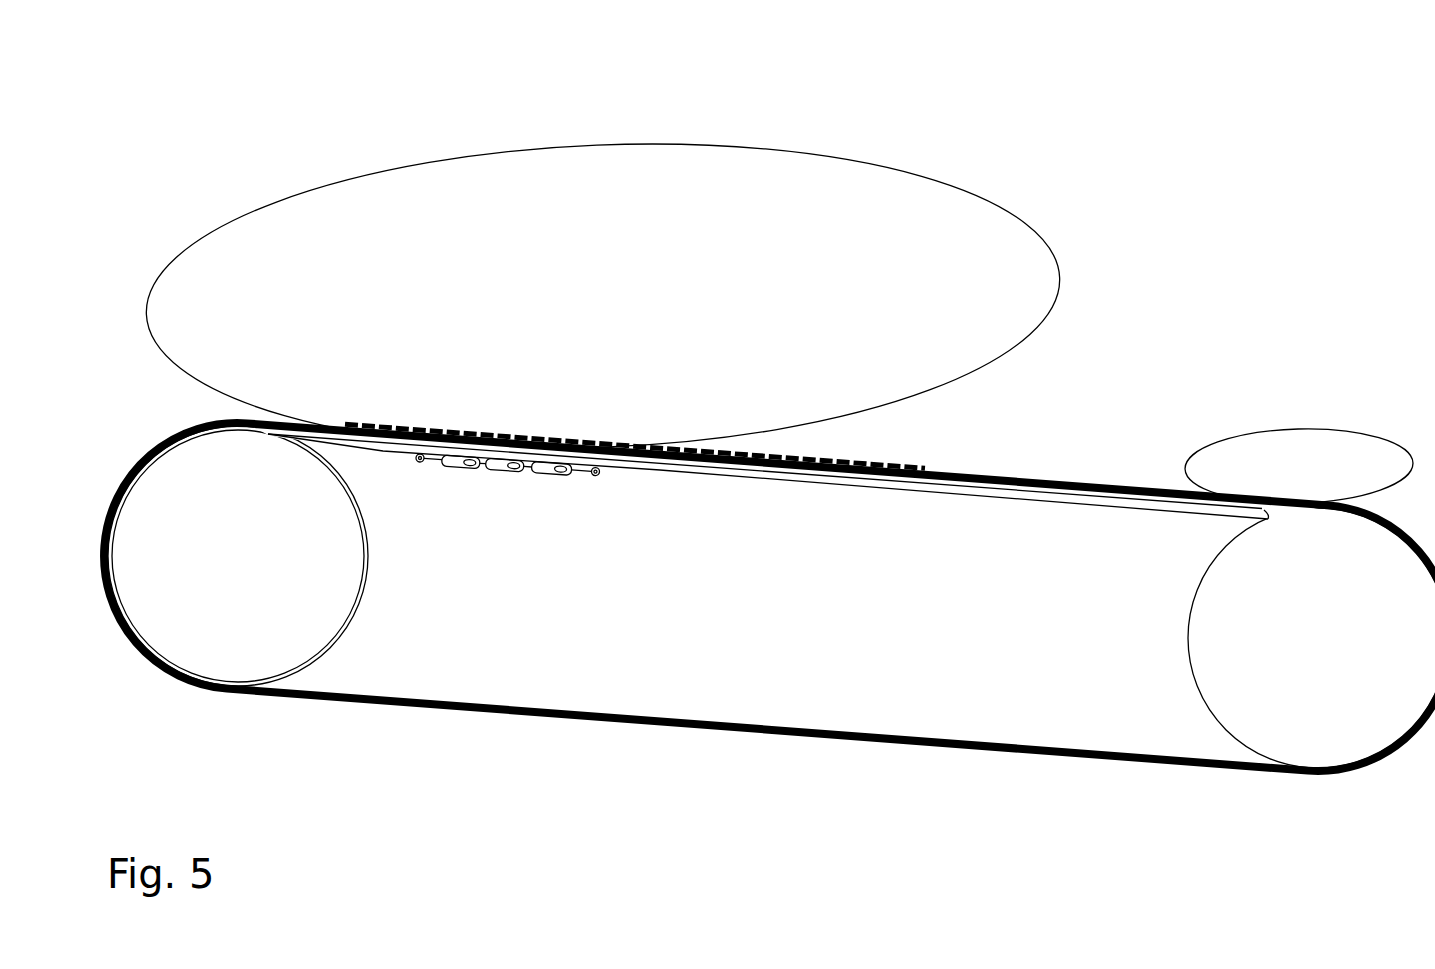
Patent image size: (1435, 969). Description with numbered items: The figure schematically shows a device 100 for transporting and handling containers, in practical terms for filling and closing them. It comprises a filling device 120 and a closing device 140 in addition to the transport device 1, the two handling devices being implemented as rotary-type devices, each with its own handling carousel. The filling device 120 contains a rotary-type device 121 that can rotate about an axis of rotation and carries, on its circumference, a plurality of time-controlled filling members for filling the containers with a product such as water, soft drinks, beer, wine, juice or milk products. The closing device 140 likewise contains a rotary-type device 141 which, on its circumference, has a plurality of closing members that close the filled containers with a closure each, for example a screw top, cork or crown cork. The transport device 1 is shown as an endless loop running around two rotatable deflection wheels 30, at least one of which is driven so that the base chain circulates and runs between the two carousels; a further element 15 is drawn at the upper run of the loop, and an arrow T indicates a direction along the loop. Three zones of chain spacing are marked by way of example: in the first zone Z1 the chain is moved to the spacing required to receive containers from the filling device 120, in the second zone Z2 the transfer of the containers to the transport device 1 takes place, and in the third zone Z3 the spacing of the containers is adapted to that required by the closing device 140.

The device for transporting and handling containers 100 is at (1230, 217).
The filling device 120 is at (228, 187).
The rotary-type device 121 is at (552, 318).
The closing device 140 is at (1317, 422).
The rotary-type device 141 is at (1337, 481).
The transport device 1 is at (1088, 483).
The workpiece carrier sheet 15 is at (642, 467).
The deflection wheel 30 is at (223, 633).
The first zone Z1 is at (380, 434).
The second zone Z2 is at (519, 445).
The third zone Z3 is at (798, 476).
The transport direction T is at (1128, 537).